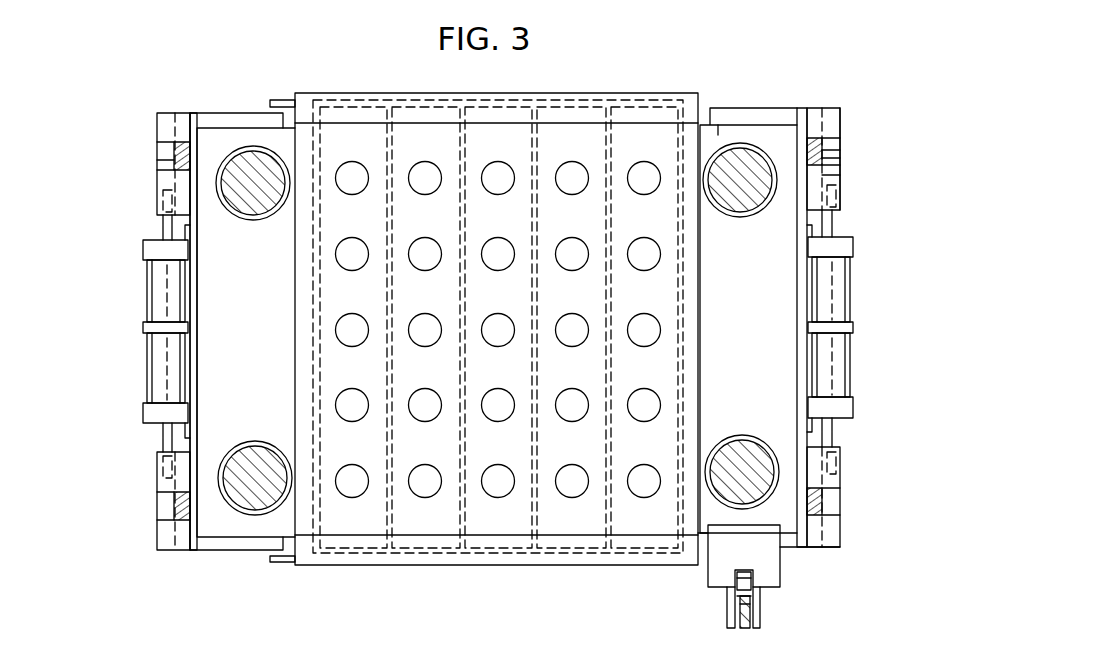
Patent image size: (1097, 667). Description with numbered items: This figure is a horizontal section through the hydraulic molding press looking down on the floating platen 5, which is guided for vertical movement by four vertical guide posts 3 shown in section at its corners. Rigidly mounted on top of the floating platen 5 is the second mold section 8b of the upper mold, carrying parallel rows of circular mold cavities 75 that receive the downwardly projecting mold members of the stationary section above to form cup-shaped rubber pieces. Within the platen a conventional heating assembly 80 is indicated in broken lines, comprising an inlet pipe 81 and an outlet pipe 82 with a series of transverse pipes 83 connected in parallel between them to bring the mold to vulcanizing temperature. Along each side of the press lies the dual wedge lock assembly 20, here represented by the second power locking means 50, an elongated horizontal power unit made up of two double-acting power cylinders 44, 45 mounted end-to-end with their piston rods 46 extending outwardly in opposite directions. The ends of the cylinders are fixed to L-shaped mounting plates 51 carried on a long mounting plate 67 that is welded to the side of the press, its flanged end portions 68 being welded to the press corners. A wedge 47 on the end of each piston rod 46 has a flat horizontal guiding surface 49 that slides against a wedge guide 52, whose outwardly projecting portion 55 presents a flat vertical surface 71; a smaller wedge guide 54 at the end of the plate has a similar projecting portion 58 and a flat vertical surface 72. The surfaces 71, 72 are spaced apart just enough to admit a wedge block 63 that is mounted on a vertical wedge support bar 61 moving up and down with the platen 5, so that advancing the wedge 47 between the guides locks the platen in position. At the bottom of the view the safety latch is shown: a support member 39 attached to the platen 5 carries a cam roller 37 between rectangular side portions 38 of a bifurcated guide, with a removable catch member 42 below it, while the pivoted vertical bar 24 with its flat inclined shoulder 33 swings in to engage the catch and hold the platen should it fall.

The vertical guide posts 3 is at (258, 212).
The floating platen 5 is at (718, 135).
The second mold section 8b is at (330, 362).
The dual wedge lock assembly 20 is at (80, 168).
The vertical bar 24 is at (745, 630).
The flat inclined shoulder 33 is at (745, 600).
The cam roller 37 is at (750, 577).
The rectangular side portions 38 is at (730, 614).
The support member 39 is at (780, 557).
The catch member 42 is at (708, 580).
The double-acting power cylinder 44 is at (155, 374).
The double-acting power cylinder 45 is at (155, 298).
The piston rods 46 is at (162, 440).
The wedge 47 is at (162, 160).
The flat horizontal guiding surface 49 is at (830, 160).
The second power locking means 50 is at (880, 106).
The L-shaped mounting plates 51 is at (143, 243).
The wedge guides 52 is at (162, 185).
The smaller wedge guides 54 is at (160, 122).
The outwardly projecting portion 55 is at (838, 185).
The projecting portion 58 is at (841, 118).
The vertical wedge support bars 61 is at (178, 156).
The wedge block 63 is at (842, 507).
The mounting plates 67 is at (196, 303).
The flanged end portions 68 is at (236, 112).
The flat vertical surface 71 is at (807, 480).
The flat vertical surface 72 is at (807, 492).
The circular mold cavities 75 is at (652, 262).
The heating assembly 80 is at (628, 100).
The inlet pipe 81 is at (283, 100).
The outlet pipe 82 is at (272, 562).
The transverse pipes 83 is at (393, 156).